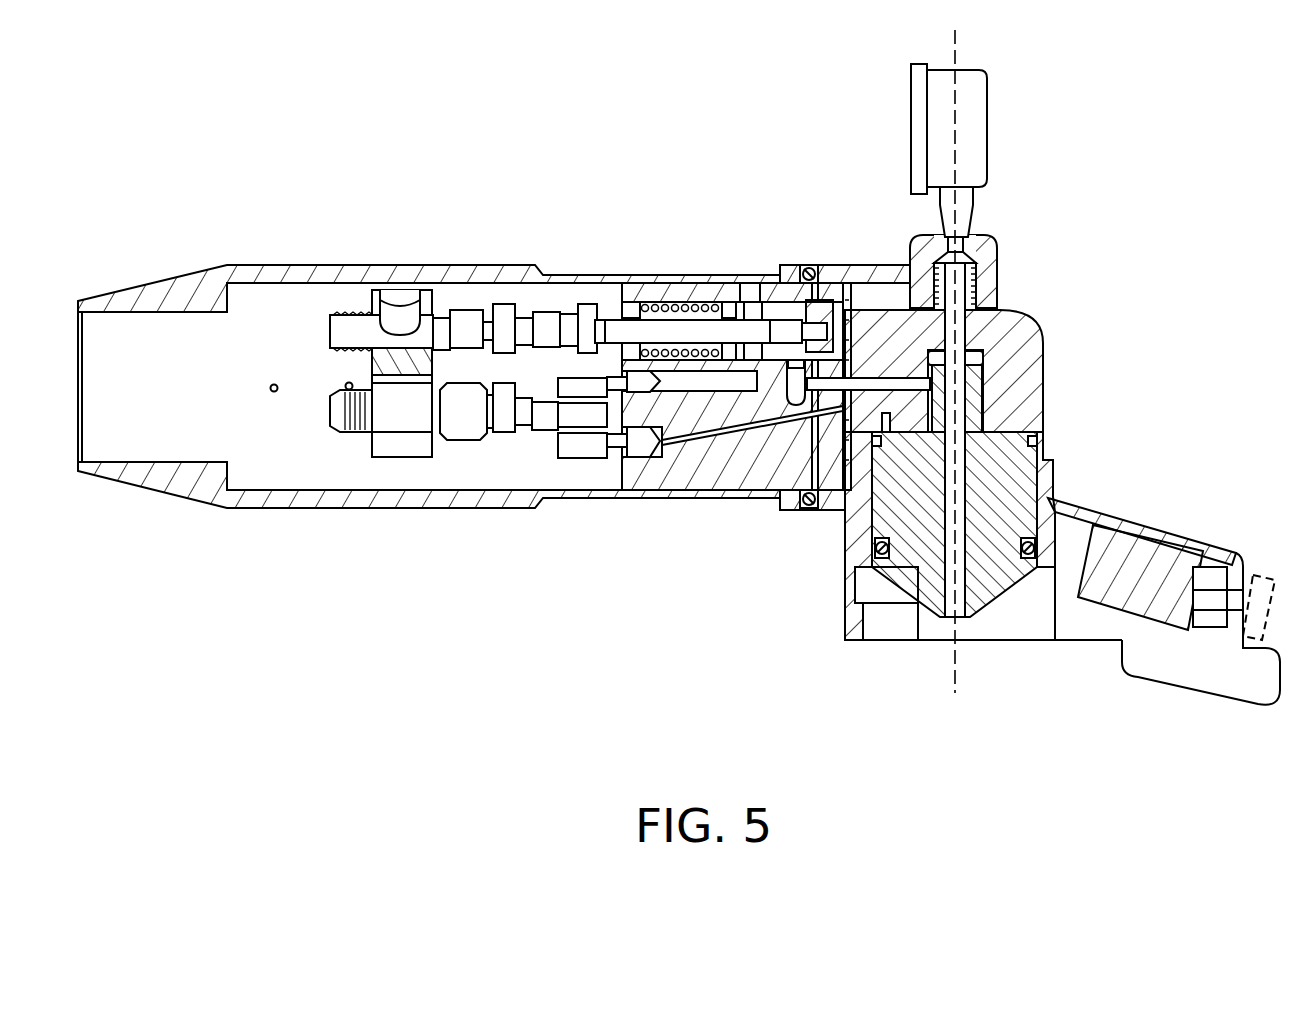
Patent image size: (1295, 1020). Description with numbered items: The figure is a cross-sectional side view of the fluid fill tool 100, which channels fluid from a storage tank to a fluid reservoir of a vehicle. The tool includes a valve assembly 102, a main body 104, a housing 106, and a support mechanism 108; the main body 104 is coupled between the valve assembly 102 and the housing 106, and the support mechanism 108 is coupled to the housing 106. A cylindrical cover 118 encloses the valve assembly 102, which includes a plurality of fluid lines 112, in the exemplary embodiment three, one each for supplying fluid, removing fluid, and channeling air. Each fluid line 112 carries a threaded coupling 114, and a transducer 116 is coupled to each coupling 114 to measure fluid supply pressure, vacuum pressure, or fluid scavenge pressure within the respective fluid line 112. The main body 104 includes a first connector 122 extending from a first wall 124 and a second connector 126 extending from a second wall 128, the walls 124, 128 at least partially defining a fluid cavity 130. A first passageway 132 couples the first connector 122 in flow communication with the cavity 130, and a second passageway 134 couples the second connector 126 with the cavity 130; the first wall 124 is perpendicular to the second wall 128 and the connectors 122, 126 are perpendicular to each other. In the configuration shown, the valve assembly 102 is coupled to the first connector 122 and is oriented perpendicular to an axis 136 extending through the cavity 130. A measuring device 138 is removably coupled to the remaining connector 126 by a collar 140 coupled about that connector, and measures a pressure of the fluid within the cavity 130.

The fluid fill tool 100 is at (122, 168).
The valve assembly 102 is at (470, 558).
The main body 104 is at (1037, 355).
The housing 106 is at (847, 630).
The support mechanism 108 is at (1115, 548).
The fluid lines 112 is at (600, 316).
The threaded couplings 114 is at (355, 312).
The transducer 116 is at (402, 328).
The cylindrical cover 118 is at (195, 273).
The first connector 122 is at (818, 398).
The first wall 124 is at (853, 333).
The second connector 126 is at (968, 302).
The second wall 128 is at (915, 323).
The fluid cavity 130 is at (980, 357).
The first passageway 132 is at (857, 392).
The second passageway 134 is at (960, 330).
The axis 136 is at (955, 710).
The measuring device 138 is at (975, 101).
The collar 140 is at (987, 248).